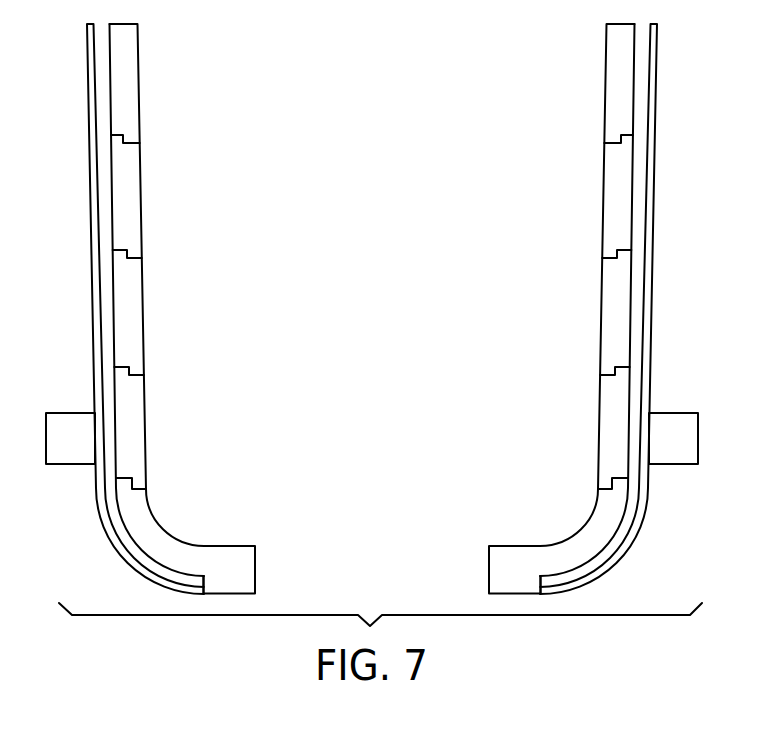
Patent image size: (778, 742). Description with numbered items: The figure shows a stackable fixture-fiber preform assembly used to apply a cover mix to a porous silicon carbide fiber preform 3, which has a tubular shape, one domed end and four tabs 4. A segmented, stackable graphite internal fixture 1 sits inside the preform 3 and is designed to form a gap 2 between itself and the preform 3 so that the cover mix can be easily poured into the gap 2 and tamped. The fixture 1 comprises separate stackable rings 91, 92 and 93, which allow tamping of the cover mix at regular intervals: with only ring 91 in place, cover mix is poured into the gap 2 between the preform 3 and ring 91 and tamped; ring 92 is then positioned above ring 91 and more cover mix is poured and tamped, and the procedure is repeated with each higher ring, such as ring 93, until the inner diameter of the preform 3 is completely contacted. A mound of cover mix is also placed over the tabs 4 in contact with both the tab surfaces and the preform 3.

The fixture 1 is at (162, 345).
The gap 2 is at (120, 292).
The preform 3 is at (116, 218).
The tabs 4 is at (70, 438).
The ring 91 is at (131, 436).
The ring 92 is at (128, 318).
The ring 93 is at (125, 182).